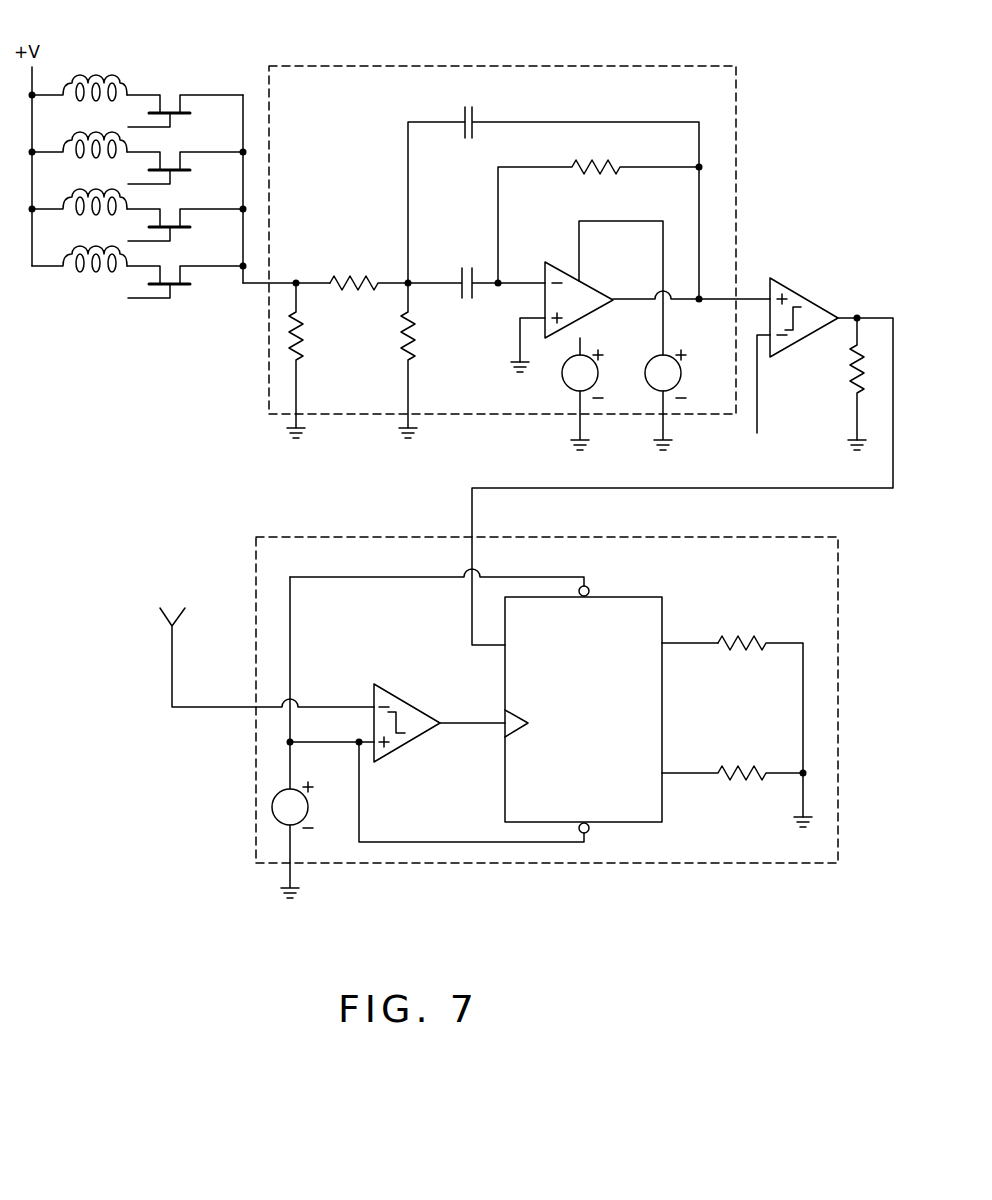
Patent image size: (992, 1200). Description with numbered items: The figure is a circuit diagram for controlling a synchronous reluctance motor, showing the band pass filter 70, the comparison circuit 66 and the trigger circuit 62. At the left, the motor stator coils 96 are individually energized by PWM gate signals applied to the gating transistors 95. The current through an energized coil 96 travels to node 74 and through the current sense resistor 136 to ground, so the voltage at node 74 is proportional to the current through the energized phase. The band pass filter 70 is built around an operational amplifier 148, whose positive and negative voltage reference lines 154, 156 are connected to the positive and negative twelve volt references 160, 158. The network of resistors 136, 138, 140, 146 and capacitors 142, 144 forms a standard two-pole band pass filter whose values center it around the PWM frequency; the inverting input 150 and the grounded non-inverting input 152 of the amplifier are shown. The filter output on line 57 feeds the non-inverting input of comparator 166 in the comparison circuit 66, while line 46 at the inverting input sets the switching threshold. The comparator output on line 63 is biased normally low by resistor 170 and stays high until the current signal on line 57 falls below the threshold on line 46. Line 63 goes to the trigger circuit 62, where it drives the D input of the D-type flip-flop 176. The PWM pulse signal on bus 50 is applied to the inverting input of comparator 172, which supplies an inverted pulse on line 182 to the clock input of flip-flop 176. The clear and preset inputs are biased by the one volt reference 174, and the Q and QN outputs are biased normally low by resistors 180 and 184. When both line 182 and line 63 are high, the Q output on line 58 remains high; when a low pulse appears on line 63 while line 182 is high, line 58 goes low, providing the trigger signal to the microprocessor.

The motor stator coils 96 is at (108, 62).
The gating transistors 95 is at (170, 80).
The band pass filter 70 is at (300, 72).
The node 74 is at (298, 281).
The current sense resistor 136 is at (302, 345).
The resistor 138 is at (345, 290).
The resistor 140 is at (414, 337).
The capacitor 142 is at (474, 120).
The capacitor 144 is at (460, 281).
The resistor 146 is at (593, 166).
The operational amplifier 148 is at (568, 275).
The inverting input 150 is at (510, 282).
The non-inverting input 152 is at (530, 318).
The positive voltage reference line 154 is at (585, 262).
The negative voltage reference line 156 is at (583, 345).
The negative 12 volt reference 158 is at (566, 385).
The positive 12 volt reference 160 is at (681, 372).
The line 57 is at (720, 298).
The comparison circuit 66 is at (786, 255).
The comparator 166 is at (810, 300).
The line 63 is at (857, 316).
The resistor 170 is at (850, 370).
The line 46 is at (757, 420).
The trigger circuit 62 is at (290, 545).
The bus 50 is at (172, 683).
The comparator 172 is at (415, 710).
The 1 volt reference 174 is at (309, 808).
The flip-flop 176 is at (662, 707).
The line 182 is at (470, 724).
The trigger line 58 is at (705, 643).
The resistor 180 is at (750, 643).
The resistor 184 is at (740, 773).